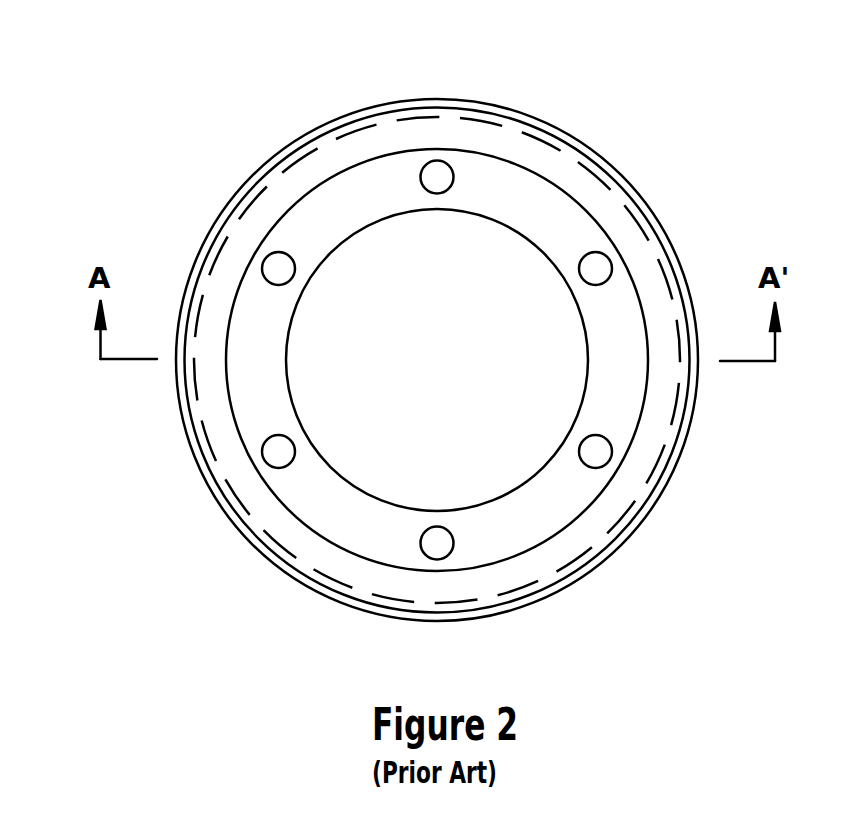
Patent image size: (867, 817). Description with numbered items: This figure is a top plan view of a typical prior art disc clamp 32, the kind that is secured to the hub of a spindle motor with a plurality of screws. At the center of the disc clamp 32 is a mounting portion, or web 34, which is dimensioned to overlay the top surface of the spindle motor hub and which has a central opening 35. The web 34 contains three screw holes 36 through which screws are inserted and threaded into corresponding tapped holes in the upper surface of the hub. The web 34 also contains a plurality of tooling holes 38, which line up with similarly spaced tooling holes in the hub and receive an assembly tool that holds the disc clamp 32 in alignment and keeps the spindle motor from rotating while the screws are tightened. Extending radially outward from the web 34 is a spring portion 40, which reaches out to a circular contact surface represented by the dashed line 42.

The disc clamp 32 is at (265, 110).
The web 34 is at (267, 323).
The central opening 35 is at (287, 382).
The screw holes 36 is at (436, 160).
The tooling holes 38 is at (263, 260).
The spring portion 40 is at (650, 297).
The contact surface 42 is at (677, 410).